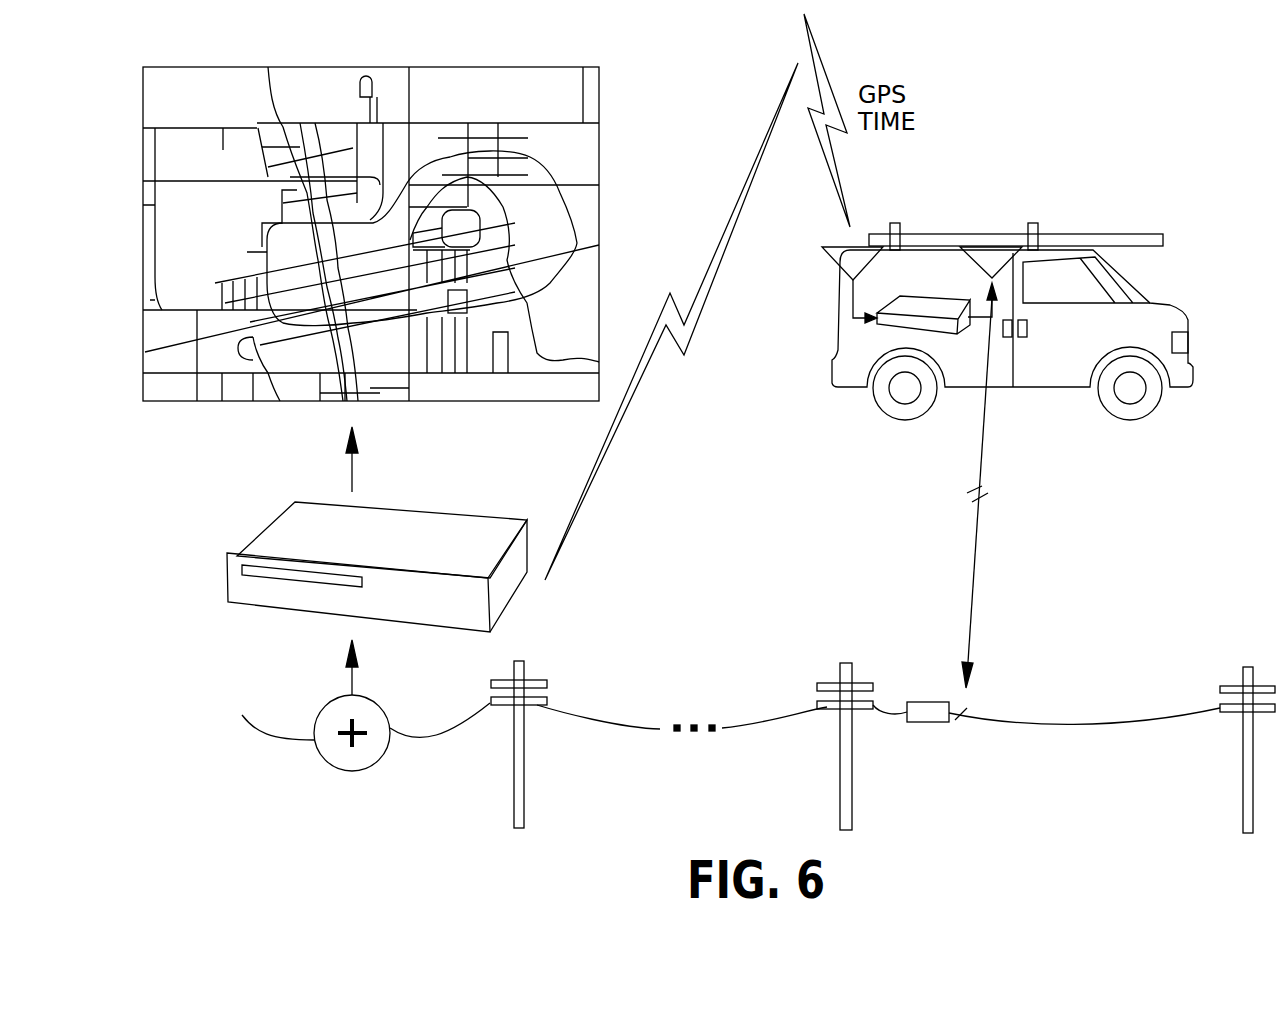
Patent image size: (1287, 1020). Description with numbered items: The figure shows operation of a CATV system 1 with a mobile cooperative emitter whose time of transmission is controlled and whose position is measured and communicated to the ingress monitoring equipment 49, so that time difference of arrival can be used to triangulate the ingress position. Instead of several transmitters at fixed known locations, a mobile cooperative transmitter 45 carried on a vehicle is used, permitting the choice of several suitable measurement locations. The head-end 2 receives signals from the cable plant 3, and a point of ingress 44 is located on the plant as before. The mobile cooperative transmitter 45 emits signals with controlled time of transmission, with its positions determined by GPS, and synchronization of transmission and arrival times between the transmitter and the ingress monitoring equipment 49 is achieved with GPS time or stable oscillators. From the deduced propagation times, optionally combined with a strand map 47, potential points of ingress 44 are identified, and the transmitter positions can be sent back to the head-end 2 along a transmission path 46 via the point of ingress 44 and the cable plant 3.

The CATV system 1 is at (314, 818).
The head-end 2 is at (271, 714).
The cable plant 3 is at (606, 760).
The point of ingress 44 is at (928, 722).
The mobile cooperative transmitter 45 is at (1168, 303).
The transmission path 46 is at (970, 607).
The strand map 47 is at (600, 160).
The ingress monitoring equipment 49 is at (480, 517).